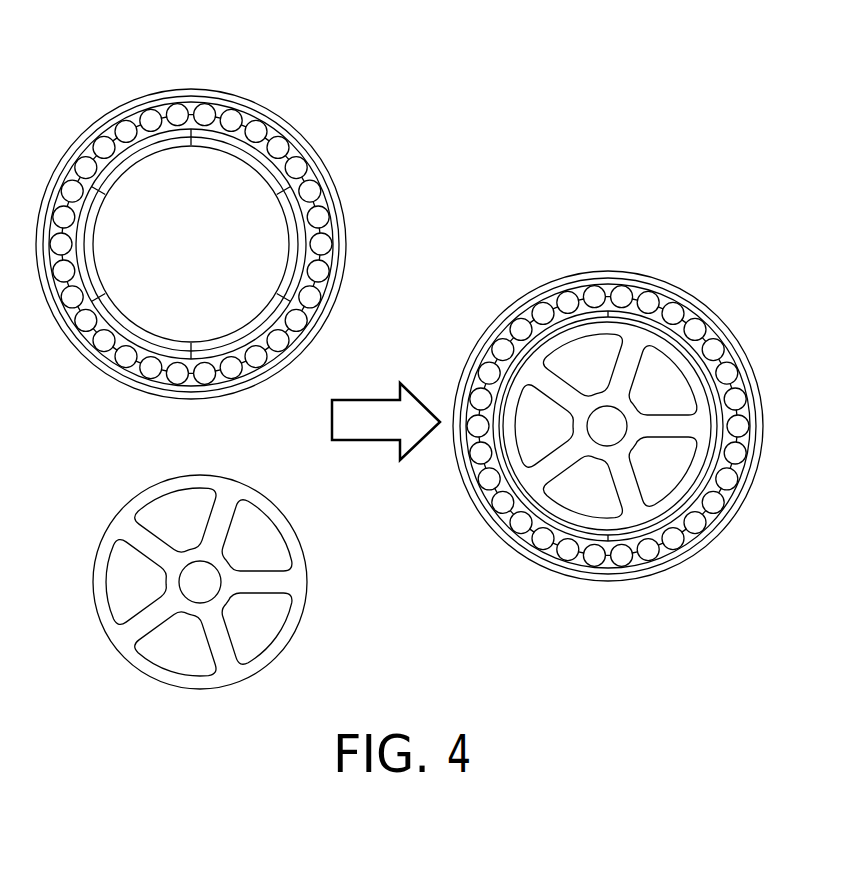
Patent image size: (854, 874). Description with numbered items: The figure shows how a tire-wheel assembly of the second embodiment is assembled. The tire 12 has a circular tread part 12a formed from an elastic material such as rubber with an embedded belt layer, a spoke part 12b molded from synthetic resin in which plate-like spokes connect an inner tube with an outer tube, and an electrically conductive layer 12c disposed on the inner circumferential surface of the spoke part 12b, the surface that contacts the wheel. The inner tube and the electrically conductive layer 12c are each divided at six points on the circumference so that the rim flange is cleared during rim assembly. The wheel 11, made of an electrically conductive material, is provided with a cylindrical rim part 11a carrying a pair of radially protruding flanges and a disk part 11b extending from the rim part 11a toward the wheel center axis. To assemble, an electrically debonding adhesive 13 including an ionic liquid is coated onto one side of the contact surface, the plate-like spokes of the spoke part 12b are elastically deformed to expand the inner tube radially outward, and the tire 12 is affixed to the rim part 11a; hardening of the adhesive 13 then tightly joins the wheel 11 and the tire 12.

The wheel 11 is at (402, 505).
The rim part 11a is at (298, 555).
The disk part 11b is at (218, 637).
The tire 12 is at (399, 308).
The tread part 12a is at (288, 128).
The spoke part 12b is at (312, 155).
The electrically conductive layer 12c is at (252, 167).
The electrically debonding adhesive 13 is at (573, 325).